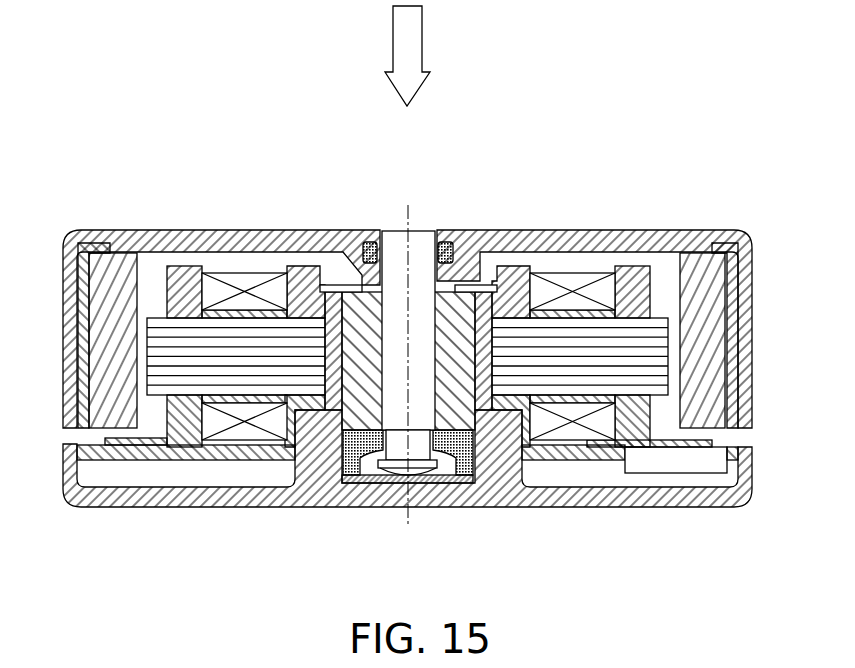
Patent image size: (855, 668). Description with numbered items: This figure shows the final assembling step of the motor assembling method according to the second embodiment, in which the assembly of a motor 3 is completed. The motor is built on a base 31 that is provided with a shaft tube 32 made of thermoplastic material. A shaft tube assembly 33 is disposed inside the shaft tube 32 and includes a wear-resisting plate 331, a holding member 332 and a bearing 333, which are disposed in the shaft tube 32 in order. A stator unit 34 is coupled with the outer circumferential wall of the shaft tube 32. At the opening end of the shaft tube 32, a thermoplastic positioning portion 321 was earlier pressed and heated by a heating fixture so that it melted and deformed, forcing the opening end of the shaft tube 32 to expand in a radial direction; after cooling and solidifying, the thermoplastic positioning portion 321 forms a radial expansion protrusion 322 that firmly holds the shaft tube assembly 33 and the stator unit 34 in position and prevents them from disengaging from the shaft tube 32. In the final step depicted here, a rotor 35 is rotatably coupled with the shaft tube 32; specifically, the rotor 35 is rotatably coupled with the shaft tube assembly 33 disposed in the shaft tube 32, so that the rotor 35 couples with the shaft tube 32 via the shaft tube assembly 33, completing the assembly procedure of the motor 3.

The motor 3 is at (603, 120).
The base 31 is at (565, 497).
The shaft tube 32 is at (480, 338).
The thermoplastic positioning portion 321 is at (483, 283).
The radial expansion protrusion 322 is at (490, 285).
The shaft tube assembly 33 is at (448, 258).
The wear-resisting plate 331 is at (383, 478).
The holding member 332 is at (457, 462).
The bearing 333 is at (362, 287).
The stator unit 34 is at (601, 238).
The rotor 35 is at (682, 238).